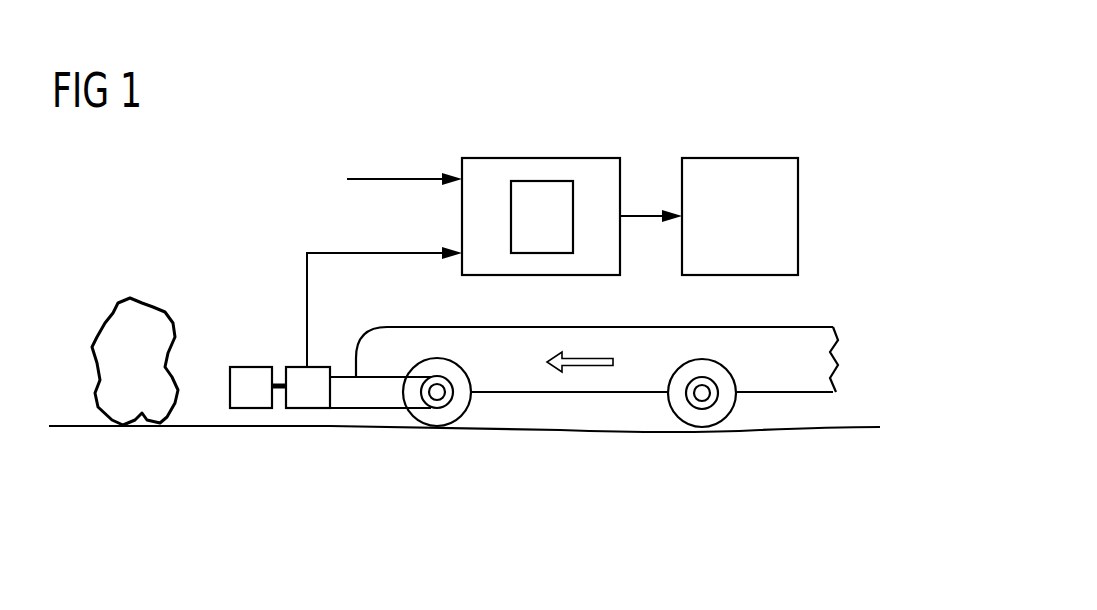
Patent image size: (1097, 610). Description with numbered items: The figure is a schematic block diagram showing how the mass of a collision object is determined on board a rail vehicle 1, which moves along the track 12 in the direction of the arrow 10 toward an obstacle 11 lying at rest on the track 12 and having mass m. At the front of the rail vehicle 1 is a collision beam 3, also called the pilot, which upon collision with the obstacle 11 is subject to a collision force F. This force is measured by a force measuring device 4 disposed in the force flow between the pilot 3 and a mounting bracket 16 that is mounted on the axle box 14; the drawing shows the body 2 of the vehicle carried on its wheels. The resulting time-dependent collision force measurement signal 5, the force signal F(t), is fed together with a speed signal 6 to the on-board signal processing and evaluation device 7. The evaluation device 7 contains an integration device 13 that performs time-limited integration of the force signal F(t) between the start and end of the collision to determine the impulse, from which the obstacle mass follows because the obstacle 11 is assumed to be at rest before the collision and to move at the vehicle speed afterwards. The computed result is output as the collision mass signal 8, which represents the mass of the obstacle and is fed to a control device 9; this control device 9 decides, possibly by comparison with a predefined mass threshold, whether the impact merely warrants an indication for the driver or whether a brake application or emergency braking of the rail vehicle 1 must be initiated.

The rail vehicle 1 is at (890, 277).
The vehicle 2 is at (810, 337).
The collision beam 3 is at (250, 369).
The force measuring device 4 is at (298, 369).
The collision force measurement signal 5 is at (318, 252).
The speed signal 6 is at (428, 176).
The signal processing and evaluation device 7 is at (490, 170).
The collision mass signal 8 is at (636, 213).
The control device 9 is at (727, 170).
The arrow 10 is at (614, 356).
The obstacle 11 is at (153, 312).
The track 12 is at (220, 430).
The integration device 13 is at (545, 188).
The axle box 14 is at (437, 402).
The mounting bracket 16 is at (356, 397).